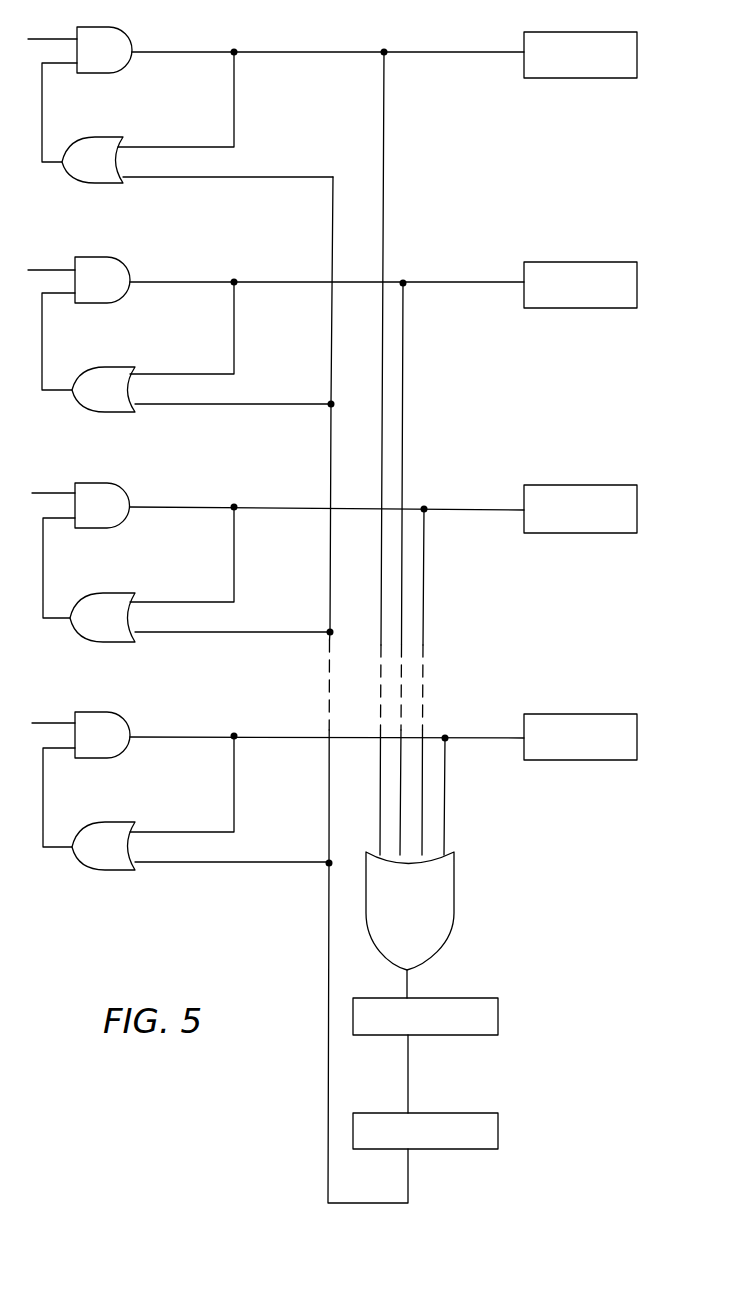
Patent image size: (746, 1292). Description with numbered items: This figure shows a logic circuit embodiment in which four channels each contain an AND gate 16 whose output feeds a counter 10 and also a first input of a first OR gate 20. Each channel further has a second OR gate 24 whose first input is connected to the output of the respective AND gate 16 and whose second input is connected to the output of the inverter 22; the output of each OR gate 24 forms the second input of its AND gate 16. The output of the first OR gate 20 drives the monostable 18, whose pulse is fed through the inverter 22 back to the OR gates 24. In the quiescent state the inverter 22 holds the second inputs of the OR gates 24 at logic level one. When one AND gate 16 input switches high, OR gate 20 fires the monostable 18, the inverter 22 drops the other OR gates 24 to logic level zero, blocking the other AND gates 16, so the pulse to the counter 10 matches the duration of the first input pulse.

The counter 10 is at (582, 79).
The AND gate 16 is at (113, 66).
The second OR gate 24 is at (88, 146).
The first OR gate 20 is at (410, 911).
The monostable 18 is at (498, 1018).
The inverter 22 is at (498, 1131).